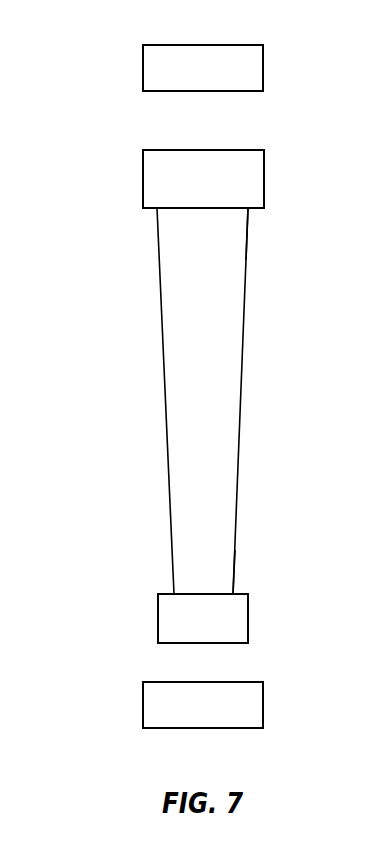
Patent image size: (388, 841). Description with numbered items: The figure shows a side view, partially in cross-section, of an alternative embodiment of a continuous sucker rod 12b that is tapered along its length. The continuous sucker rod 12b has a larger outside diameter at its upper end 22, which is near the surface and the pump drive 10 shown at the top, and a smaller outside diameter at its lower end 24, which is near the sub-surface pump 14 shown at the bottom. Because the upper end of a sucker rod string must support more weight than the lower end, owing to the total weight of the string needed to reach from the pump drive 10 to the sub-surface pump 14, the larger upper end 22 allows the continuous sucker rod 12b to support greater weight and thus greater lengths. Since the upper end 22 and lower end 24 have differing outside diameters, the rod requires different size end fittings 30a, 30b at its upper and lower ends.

The pump drive 10 is at (212, 81).
The sub-surface pump 14 is at (212, 719).
The continuous sucker rod 12b is at (246, 350).
The upper end 22 is at (250, 250).
The lower end 24 is at (234, 573).
The end fitting 30a is at (264, 178).
The end fitting 30b is at (248, 618).